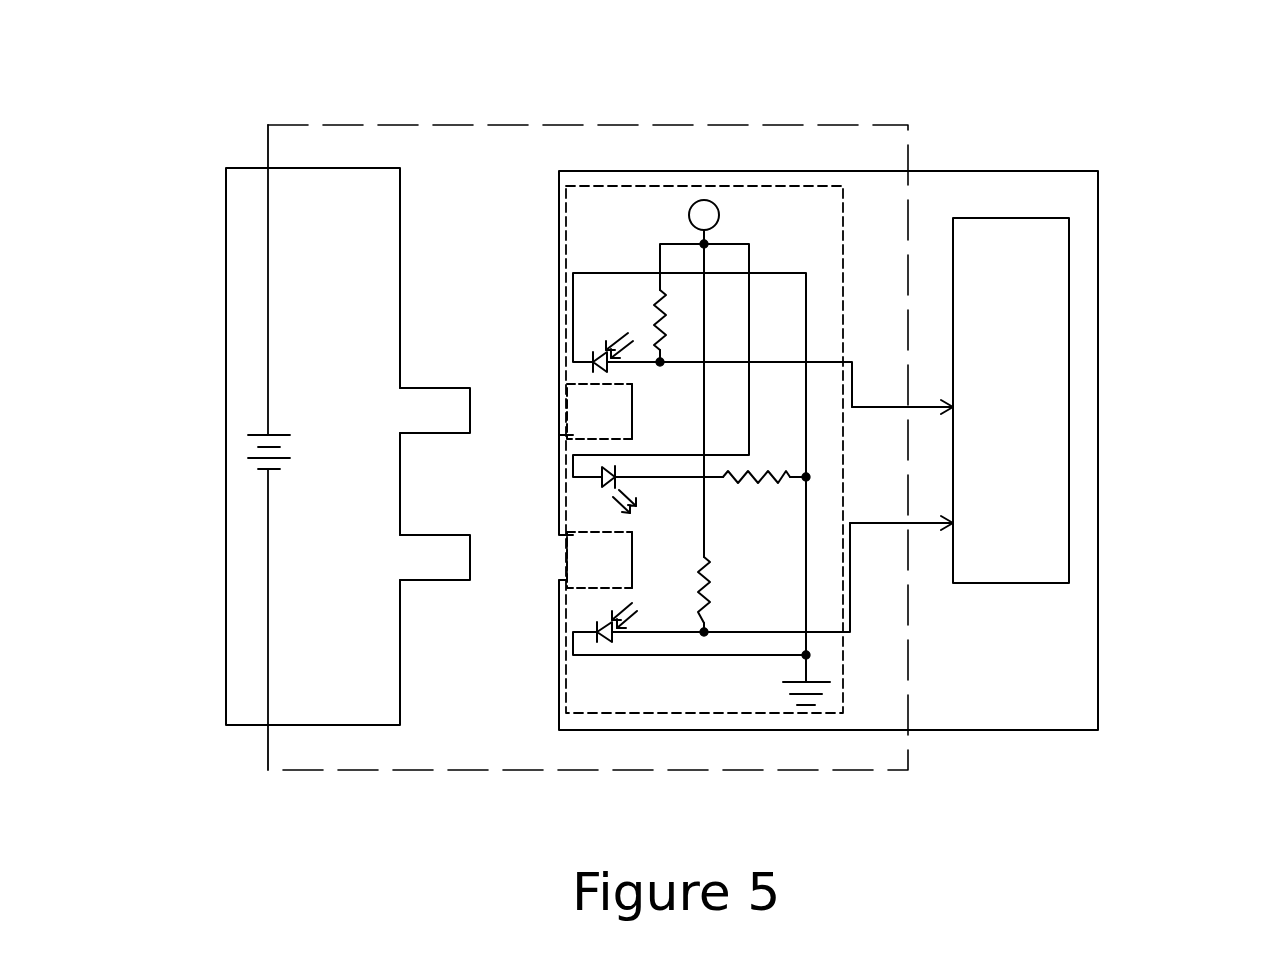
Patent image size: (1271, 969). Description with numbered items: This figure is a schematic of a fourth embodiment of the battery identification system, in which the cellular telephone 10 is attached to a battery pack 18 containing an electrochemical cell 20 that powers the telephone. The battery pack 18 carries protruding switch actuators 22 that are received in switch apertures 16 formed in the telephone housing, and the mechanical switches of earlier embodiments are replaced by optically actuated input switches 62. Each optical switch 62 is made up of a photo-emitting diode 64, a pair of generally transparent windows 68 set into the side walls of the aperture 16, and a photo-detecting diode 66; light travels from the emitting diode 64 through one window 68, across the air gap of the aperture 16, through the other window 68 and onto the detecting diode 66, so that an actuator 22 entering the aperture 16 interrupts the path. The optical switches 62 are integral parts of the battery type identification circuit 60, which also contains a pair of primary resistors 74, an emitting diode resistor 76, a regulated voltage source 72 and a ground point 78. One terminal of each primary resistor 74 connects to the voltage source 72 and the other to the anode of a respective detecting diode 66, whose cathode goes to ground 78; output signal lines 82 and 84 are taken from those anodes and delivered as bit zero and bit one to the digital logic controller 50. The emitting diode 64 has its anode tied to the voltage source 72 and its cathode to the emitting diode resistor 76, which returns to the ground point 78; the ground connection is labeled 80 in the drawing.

The cellular telephone 10 is at (1088, 80).
The switch aperture 16 is at (583, 568).
The battery pack 18 is at (225, 200).
The electrochemical cell 20 is at (262, 435).
The switch actuator 22 is at (405, 388).
The digital logic controller 50 is at (1070, 240).
The battery type identification circuit 60 is at (605, 185).
The optically actuated input switch 62 is at (543, 400).
The photo-emitting diode 64 is at (598, 468).
The photo-detecting diode 66 is at (593, 358).
The transparent window 68 is at (567, 540).
The regulated voltage source 72 is at (697, 201).
The primary resistor 74 is at (657, 300).
The emitting diode resistor 76 is at (753, 473).
The ground point 78 is at (830, 684).
The ground bus 80 is at (807, 620).
The output signal line 82 is at (953, 412).
The output signal line 84 is at (953, 528).